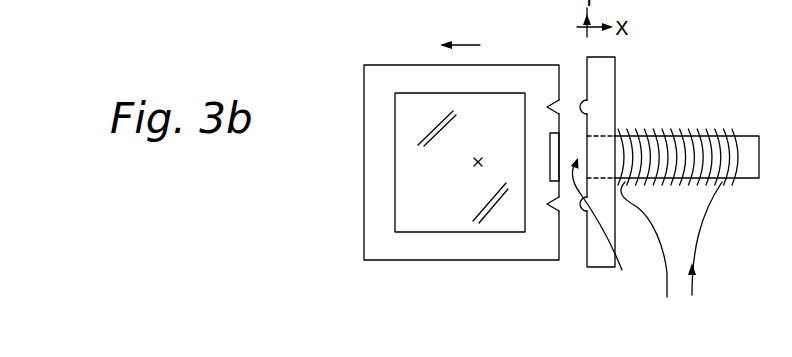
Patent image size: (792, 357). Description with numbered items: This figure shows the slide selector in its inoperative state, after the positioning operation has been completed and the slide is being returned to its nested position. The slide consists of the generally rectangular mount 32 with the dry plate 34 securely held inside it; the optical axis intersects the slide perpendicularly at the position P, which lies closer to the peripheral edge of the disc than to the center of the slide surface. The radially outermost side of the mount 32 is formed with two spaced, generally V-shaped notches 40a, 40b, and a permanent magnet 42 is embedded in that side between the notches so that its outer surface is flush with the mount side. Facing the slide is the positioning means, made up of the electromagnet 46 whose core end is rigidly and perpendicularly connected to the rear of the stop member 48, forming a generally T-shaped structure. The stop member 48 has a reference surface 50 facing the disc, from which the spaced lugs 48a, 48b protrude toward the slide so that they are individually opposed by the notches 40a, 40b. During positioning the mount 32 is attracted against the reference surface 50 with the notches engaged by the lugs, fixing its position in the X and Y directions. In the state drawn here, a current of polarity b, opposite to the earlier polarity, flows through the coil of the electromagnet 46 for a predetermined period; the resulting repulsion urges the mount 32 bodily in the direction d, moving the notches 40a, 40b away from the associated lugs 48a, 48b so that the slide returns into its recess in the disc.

The mount 32 is at (382, 253).
The dry plate 34 is at (428, 222).
The notch 40a is at (553, 107).
The notch 40b is at (549, 212).
The permanent magnet 42 is at (550, 182).
The electromagnet 46 is at (710, 160).
The stop member 48 is at (608, 77).
The lug 48a is at (583, 99).
The lug 48b is at (580, 213).
The reference surface 50 is at (605, 230).
The position P is at (475, 167).
The polarity b is at (704, 253).
The direction d is at (451, 46).